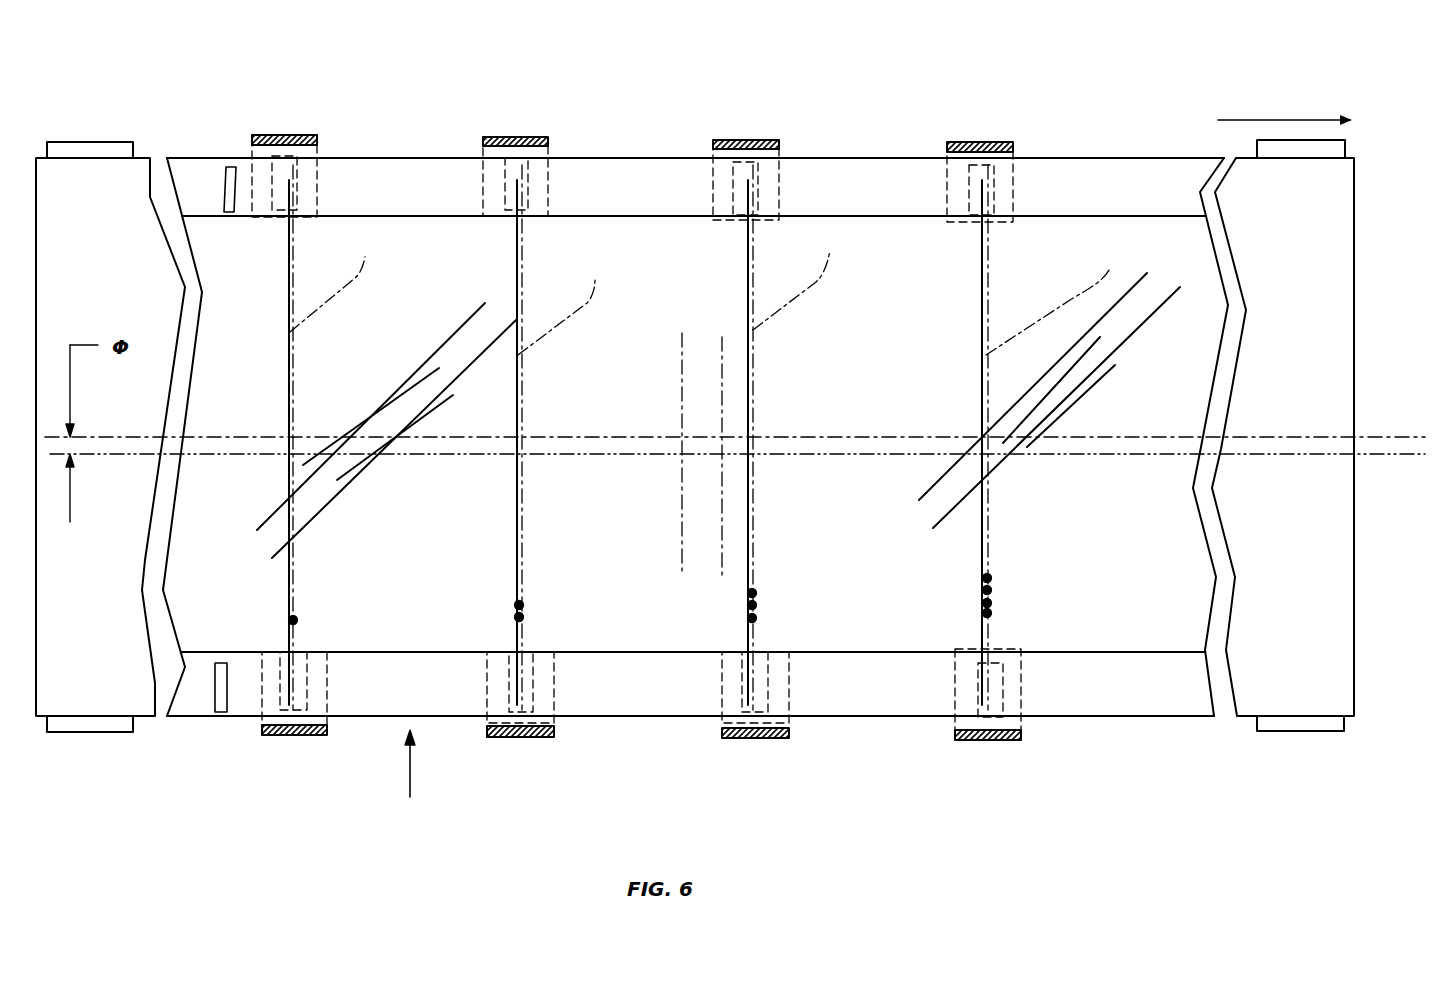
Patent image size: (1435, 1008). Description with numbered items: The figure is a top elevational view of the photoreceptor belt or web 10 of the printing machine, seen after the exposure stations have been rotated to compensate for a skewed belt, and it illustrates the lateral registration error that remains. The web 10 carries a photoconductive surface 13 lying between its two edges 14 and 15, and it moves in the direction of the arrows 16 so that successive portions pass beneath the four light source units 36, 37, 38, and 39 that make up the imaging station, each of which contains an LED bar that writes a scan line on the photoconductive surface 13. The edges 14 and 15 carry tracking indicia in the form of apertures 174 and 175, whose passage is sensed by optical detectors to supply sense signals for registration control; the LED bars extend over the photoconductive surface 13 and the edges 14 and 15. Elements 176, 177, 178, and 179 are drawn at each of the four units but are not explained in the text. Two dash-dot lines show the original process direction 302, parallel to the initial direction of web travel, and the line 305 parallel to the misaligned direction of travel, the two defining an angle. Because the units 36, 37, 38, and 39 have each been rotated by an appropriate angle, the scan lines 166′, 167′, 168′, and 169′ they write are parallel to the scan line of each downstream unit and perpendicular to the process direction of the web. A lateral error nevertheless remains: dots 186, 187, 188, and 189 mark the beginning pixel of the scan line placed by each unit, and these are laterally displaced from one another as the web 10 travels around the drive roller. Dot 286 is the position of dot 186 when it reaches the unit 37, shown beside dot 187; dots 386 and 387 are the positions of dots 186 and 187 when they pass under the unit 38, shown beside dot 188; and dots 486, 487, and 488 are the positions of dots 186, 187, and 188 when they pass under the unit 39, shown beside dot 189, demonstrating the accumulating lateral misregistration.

The belt or web 10 is at (392, 831).
The photoconductive surface 13 is at (881, 632).
The edge 14 is at (643, 703).
The edge 15 is at (423, 173).
The arrows 16 is at (1278, 120).
The light source unit 36 is at (300, 135).
The light source unit 37 is at (535, 137).
The light source unit 38 is at (768, 140).
The light source unit 39 is at (985, 142).
The aperture 174 is at (222, 712).
The aperture 175 is at (231, 167).
The first electrode wire 176 is at (283, 240).
The second electrode wire 177 is at (515, 240).
The third electrode wire 178 is at (745, 255).
The fourth electrode wire 179 is at (983, 262).
The scan line 166′ is at (343, 275).
The scan line 167′ is at (572, 300).
The scan line 168′ is at (808, 276).
The scan line 169′ is at (1061, 296).
The dot 186 is at (293, 620).
The dot 187 is at (519, 605).
The dot 188 is at (752, 593).
The dot 189 is at (987, 578).
The dot 286 is at (519, 617).
The dot 386 is at (752, 618).
The dot 387 is at (752, 605).
The dot 486 is at (987, 613).
The dot 487 is at (987, 603).
The dot 488 is at (987, 590).
The line 302 is at (225, 437).
The line 305 is at (238, 460).